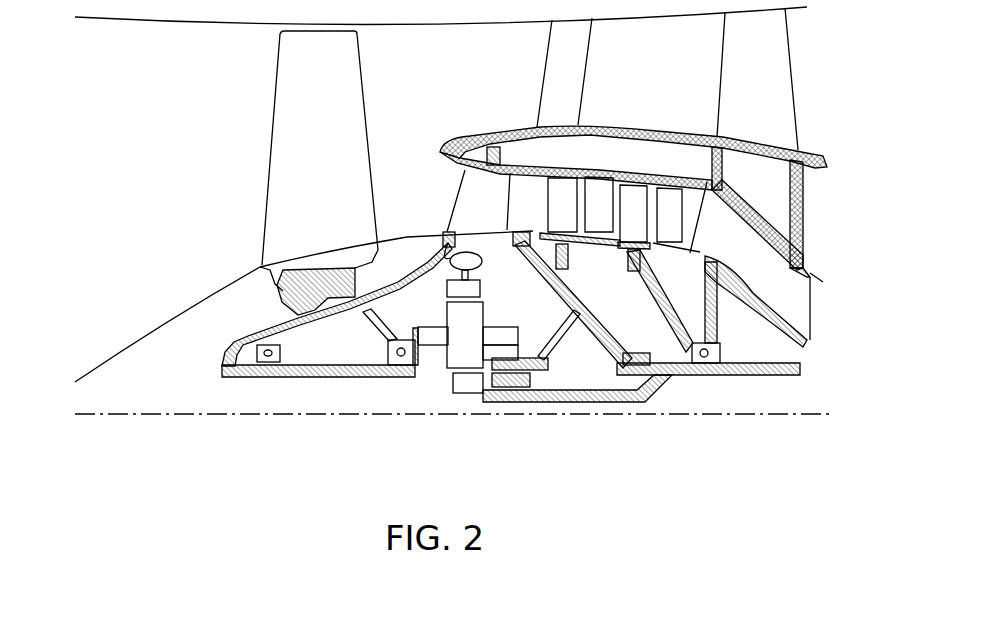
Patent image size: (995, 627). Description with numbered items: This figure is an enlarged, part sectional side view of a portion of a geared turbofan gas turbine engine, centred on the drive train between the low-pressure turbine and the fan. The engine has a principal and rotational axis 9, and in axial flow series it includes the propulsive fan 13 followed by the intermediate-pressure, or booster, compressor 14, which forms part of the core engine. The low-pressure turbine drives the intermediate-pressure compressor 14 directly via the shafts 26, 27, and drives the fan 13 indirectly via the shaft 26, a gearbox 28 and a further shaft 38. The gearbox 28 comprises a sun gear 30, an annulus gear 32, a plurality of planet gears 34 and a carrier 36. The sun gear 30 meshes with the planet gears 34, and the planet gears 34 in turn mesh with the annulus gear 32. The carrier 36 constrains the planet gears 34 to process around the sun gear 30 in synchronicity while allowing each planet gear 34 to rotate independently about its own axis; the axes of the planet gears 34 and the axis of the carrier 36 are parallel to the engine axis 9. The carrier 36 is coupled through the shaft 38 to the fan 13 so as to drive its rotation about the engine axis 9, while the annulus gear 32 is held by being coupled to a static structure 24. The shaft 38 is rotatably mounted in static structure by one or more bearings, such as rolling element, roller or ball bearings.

The principal and rotational axis 9 is at (220, 417).
The propulsive fan 13 is at (293, 117).
The intermediate-pressure compressor 14 is at (634, 197).
The static structure 24 is at (477, 203).
The shaft 26 is at (697, 382).
The shaft 27 is at (660, 303).
The gearbox 28 is at (423, 392).
The sun gear 30 is at (468, 395).
The annulus gear 32 is at (447, 305).
The planet gears 34 is at (449, 358).
The carrier 36 is at (430, 352).
The shaft 38 is at (292, 378).